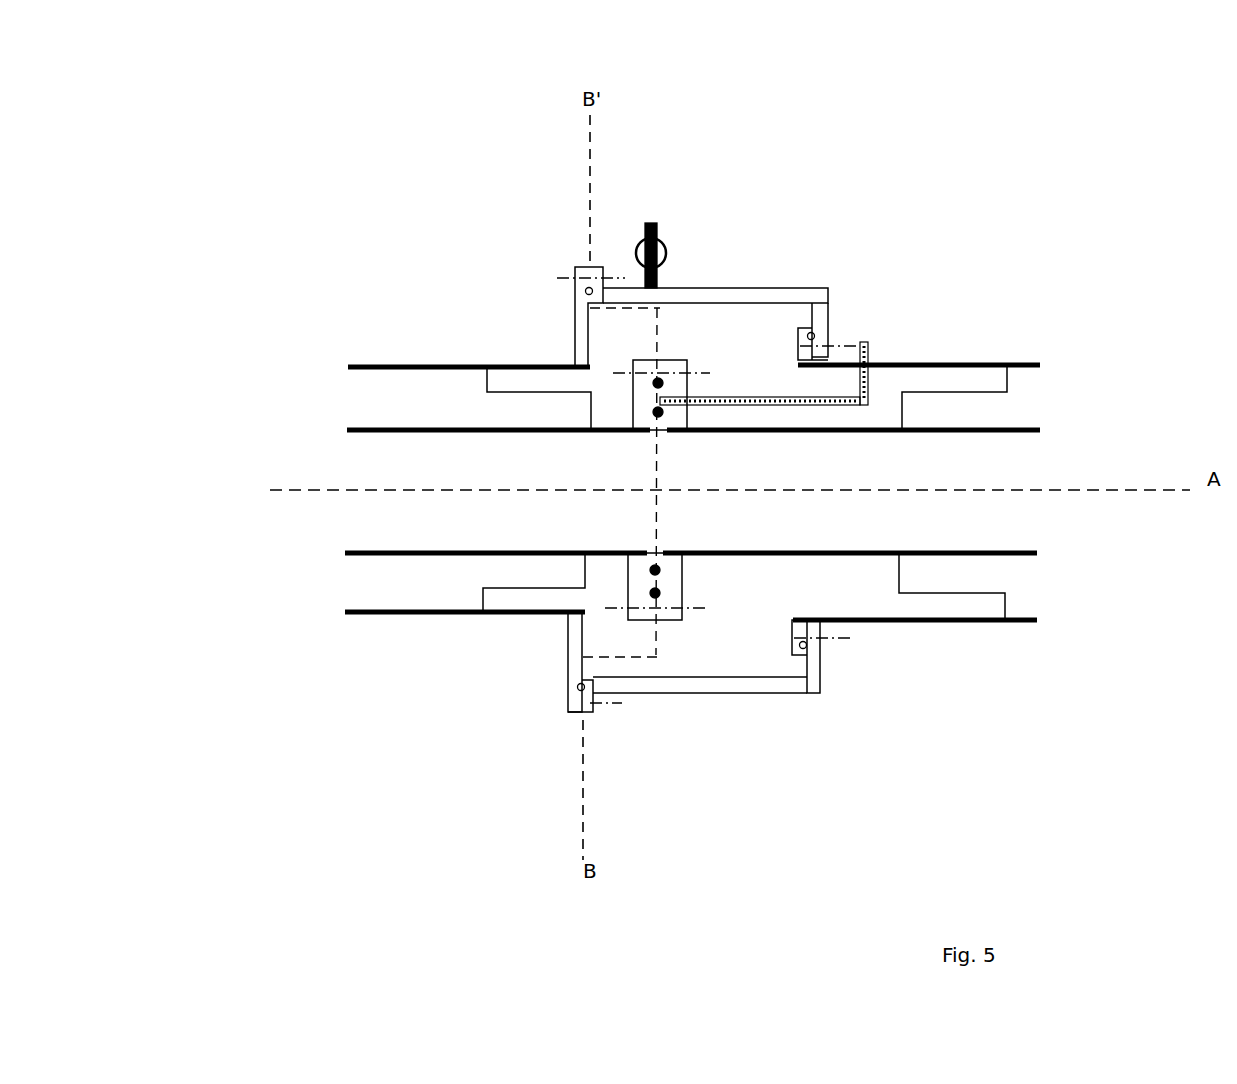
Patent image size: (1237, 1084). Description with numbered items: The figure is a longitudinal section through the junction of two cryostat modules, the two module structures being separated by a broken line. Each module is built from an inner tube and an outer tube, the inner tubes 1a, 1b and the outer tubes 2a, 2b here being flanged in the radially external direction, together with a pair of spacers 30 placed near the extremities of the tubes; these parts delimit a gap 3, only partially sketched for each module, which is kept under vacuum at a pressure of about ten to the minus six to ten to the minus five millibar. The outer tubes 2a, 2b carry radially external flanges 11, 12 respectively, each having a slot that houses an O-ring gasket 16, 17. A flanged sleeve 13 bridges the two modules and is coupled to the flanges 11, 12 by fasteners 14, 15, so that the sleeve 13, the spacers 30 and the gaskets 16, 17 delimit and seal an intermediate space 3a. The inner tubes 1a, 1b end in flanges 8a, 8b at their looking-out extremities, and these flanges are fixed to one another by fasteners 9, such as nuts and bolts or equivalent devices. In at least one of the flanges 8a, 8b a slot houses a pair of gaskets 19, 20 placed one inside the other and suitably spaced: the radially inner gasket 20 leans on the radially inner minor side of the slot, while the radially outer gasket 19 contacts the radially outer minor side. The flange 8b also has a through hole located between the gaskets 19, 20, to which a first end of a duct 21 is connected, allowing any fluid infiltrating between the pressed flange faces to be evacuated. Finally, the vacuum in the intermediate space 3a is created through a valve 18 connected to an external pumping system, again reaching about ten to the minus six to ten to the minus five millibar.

The gap 3 is at (402, 405).
The intermediate space 3a is at (730, 333).
The spacers 30 is at (1012, 384).
The sleeve 13 is at (685, 295).
The valve 18 is at (642, 232).
The flange 12 is at (807, 330).
The duct 21 is at (870, 347).
The flange 8b is at (680, 417).
The radially outer gasket 19 is at (650, 375).
The radially inner gasket 20 is at (656, 407).
The inner tube 1a is at (480, 555).
The outer tube 2a is at (508, 612).
The inner tube 1b is at (1027, 560).
The outer tube 2b is at (958, 622).
The flange 8a is at (643, 588).
The fasteners 9 is at (675, 613).
The flange 11 is at (573, 645).
The fasteners 14 is at (552, 703).
The gasket 16 is at (587, 697).
The gasket 17 is at (805, 650).
The fasteners 15 is at (845, 637).